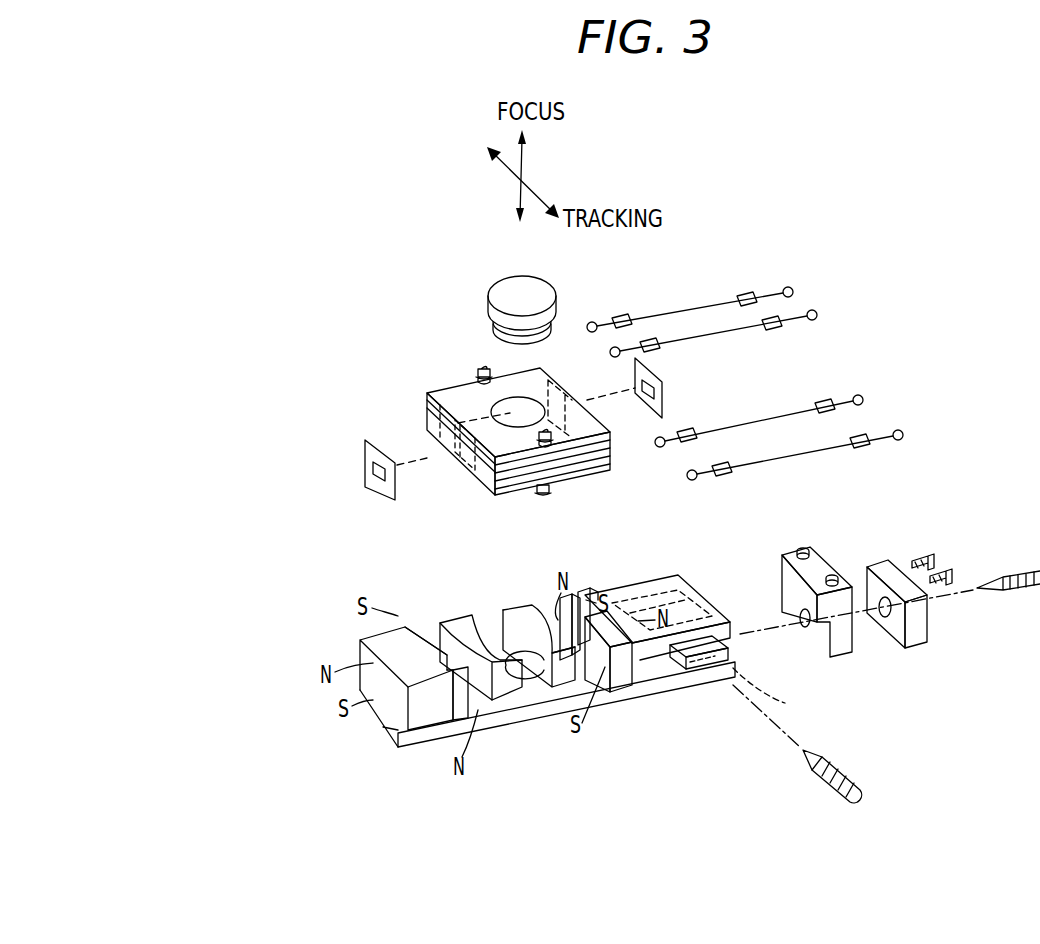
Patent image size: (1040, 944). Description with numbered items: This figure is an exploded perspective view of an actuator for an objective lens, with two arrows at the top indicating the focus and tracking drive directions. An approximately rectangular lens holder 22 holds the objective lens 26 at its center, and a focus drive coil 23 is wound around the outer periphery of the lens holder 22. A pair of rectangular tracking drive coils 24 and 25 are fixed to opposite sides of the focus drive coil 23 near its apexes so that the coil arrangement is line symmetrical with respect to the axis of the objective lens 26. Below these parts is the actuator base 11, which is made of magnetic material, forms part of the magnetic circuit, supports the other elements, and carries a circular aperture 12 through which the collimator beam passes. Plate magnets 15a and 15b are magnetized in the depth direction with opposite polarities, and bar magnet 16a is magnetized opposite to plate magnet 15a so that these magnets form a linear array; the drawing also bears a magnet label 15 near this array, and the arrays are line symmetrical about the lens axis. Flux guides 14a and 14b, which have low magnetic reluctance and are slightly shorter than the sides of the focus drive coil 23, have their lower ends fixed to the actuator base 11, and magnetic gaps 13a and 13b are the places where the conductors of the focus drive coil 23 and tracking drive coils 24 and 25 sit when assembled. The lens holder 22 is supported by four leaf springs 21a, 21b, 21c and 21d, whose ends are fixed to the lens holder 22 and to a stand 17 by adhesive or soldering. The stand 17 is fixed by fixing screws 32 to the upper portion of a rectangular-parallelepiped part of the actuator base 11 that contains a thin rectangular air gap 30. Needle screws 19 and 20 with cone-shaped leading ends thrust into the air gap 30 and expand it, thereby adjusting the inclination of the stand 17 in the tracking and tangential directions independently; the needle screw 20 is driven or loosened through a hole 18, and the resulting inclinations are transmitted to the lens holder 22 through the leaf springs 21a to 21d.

The actuator base 11 is at (392, 742).
The circular aperture 12 is at (543, 667).
The magnetic gap 13a is at (430, 622).
The magnetic gap 13b is at (545, 605).
The flux guide 14a is at (443, 623).
The flux guide 14b is at (517, 620).
The permanent magnet 15 is at (583, 597).
The plate magnet 15a is at (405, 628).
The plate magnet 15b is at (618, 680).
The bar magnet 16a is at (440, 738).
The stand 17 is at (852, 627).
The hole 18 is at (806, 630).
The needle screw 19 is at (827, 800).
The needle screw 20 is at (1027, 597).
The leaf spring 21a is at (789, 287).
The leaf spring 21b is at (815, 312).
The leaf spring 21c is at (863, 398).
The leaf spring 21d is at (903, 434).
The lens holder 22 is at (452, 395).
The focus drive coil 23 is at (423, 413).
The tracking drive coil 24 is at (365, 465).
The tracking drive coil 25 is at (663, 393).
The objective lens 26 is at (505, 285).
The air gap 30 is at (737, 627).
The fixing screws 32 is at (957, 577).